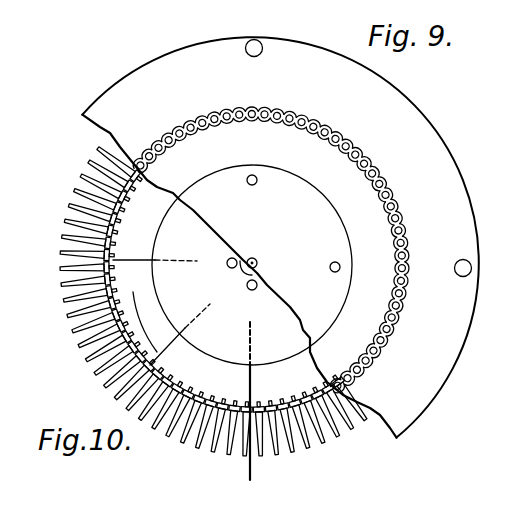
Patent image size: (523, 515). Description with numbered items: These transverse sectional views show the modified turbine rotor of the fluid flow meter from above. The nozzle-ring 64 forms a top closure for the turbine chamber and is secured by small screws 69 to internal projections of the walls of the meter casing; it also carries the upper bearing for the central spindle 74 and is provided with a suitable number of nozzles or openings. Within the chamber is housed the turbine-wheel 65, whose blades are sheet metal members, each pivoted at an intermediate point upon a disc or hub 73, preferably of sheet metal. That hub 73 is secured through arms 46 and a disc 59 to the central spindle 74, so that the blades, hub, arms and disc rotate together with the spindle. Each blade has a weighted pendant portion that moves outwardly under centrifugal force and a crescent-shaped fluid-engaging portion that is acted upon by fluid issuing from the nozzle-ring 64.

In FIG. 9, the nozzle-ring 64 is at (460, 193).
In FIG. 9, the small screws 69 is at (470, 262).
In FIG. 9, the spindle 74 is at (256, 262).
In FIG. 9, the disc 59 is at (216, 279).
In FIG. 10, the arms 46 is at (147, 266).
In FIG. 10, the disc or hub 73 is at (197, 337).
In FIG. 10, the turbine-wheel 65 is at (273, 456).